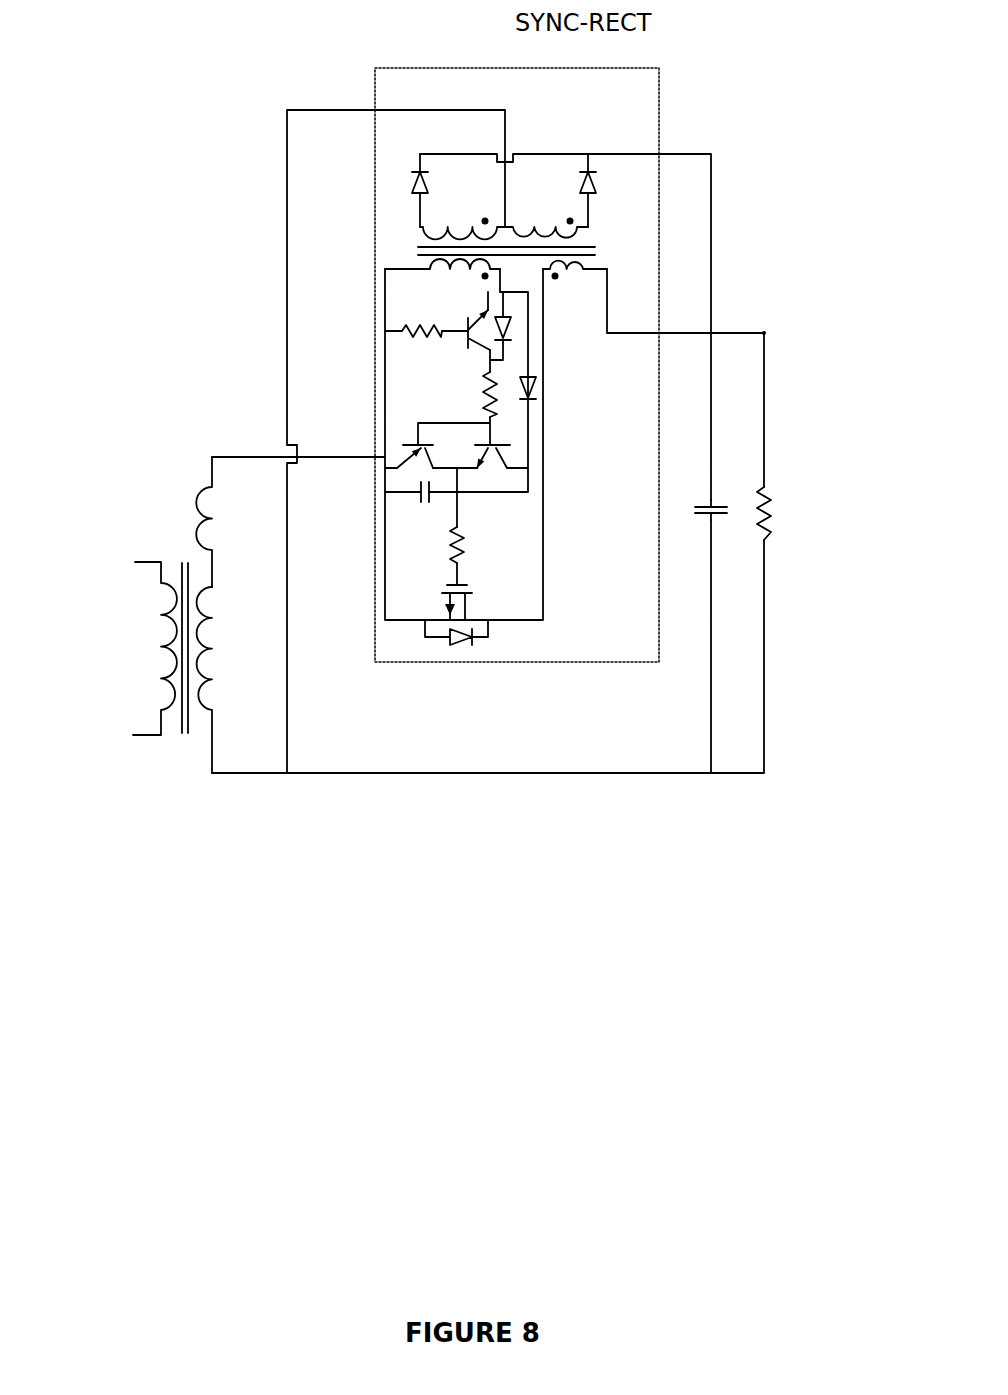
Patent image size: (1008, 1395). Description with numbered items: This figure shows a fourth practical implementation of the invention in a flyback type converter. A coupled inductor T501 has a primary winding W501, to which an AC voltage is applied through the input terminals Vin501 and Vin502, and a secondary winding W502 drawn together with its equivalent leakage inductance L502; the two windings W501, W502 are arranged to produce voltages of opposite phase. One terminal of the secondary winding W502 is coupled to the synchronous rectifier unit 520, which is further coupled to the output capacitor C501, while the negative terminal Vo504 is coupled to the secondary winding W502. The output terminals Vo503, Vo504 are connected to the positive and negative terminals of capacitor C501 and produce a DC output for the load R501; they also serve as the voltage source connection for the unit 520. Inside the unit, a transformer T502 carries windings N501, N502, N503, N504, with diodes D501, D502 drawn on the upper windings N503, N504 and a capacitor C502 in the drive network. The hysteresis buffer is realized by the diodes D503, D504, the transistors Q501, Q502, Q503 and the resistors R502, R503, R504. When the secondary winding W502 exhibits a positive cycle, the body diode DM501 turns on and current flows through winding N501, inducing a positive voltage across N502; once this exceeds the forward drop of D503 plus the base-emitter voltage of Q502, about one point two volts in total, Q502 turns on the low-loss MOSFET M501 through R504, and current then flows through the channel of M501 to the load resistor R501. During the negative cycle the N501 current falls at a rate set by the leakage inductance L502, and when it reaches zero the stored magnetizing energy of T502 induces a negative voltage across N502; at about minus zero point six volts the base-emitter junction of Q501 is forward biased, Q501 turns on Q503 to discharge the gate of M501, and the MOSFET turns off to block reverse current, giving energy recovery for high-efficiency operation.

The synchronous rectifier unit 520 is at (665, 122).
The diode D502 is at (413, 170).
The transformer winding N504 is at (463, 222).
The transformer winding N503 is at (531, 229).
The diode D501 is at (630, 205).
The transformer T502 is at (397, 254).
The winding N502 is at (456, 266).
The winding N501 is at (574, 268).
The transistor Q501 is at (467, 318).
The resistor R502 is at (403, 346).
The resistor R503 is at (482, 395).
The diode D503 is at (515, 320).
The diode D504 is at (538, 385).
The transistor Q503 is at (405, 443).
The transistor Q502 is at (493, 472).
The capacitor C502 is at (423, 512).
The resistor R504 is at (472, 547).
The MOSFET M501 is at (433, 602).
The body diode DM501 is at (462, 648).
The output capacitor C501 is at (695, 518).
The load resistor R501 is at (773, 497).
The coupled inductor T501 is at (181, 556).
The leakage inductance L502 is at (213, 503).
The secondary winding W502 is at (238, 627).
The primary winding W501 is at (162, 658).
The input terminal Vin501 is at (135, 562).
The input terminal Vin502 is at (133, 735).
The output terminal Vo503 is at (790, 322).
The output terminal Vo504 is at (705, 788).